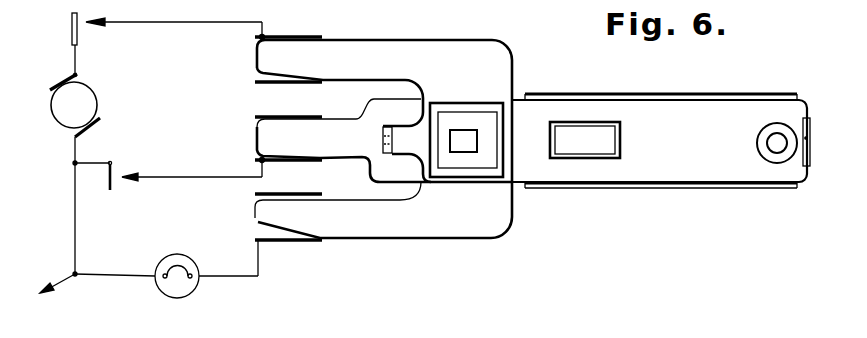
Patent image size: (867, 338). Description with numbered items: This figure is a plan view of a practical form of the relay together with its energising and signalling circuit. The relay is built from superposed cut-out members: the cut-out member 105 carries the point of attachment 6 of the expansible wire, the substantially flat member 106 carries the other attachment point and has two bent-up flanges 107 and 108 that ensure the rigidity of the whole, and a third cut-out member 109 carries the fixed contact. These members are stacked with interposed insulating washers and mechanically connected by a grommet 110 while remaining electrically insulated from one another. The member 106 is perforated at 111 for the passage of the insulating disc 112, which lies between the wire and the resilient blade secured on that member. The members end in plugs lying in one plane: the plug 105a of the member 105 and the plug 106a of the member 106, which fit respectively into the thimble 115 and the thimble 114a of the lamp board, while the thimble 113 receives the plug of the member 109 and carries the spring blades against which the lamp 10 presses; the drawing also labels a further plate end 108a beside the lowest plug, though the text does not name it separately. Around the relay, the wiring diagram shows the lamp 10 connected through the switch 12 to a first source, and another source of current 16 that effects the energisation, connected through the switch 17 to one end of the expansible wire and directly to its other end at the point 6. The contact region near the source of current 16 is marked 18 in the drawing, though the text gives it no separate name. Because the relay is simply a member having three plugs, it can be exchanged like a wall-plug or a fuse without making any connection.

The switch 12 is at (88, 40).
The source of current 16 is at (90, 98).
The switch contact 18 is at (72, 137).
The switch 17 is at (112, 185).
The lamp 10 is at (188, 294).
The electrode plate 108a is at (247, 243).
The plug 105a is at (282, 53).
The thimble 115 is at (312, 35).
The thimble 114a is at (268, 115).
The plug 106a is at (255, 147).
The cut-out member 105 is at (470, 70).
The cut-out member 109 is at (452, 227).
The point of attachment 6 is at (388, 153).
The grommet 110 is at (483, 217).
The thimble 113 is at (288, 240).
The flange 108 is at (662, 95).
The member 106 is at (720, 125).
The perforation 111 is at (622, 153).
The disc 112 is at (580, 143).
The flange 107 is at (617, 188).